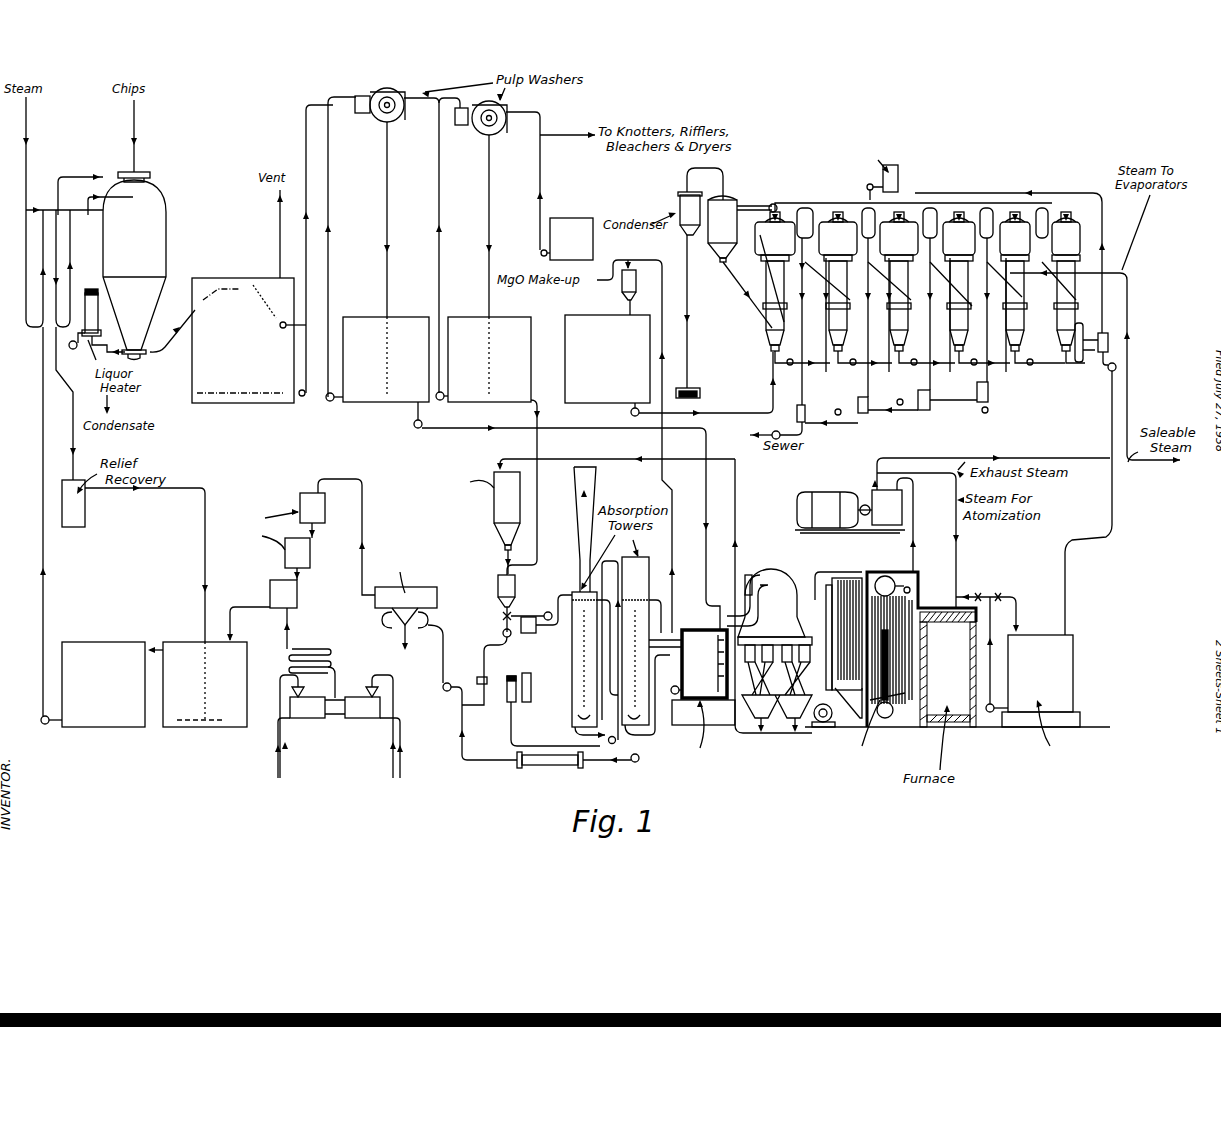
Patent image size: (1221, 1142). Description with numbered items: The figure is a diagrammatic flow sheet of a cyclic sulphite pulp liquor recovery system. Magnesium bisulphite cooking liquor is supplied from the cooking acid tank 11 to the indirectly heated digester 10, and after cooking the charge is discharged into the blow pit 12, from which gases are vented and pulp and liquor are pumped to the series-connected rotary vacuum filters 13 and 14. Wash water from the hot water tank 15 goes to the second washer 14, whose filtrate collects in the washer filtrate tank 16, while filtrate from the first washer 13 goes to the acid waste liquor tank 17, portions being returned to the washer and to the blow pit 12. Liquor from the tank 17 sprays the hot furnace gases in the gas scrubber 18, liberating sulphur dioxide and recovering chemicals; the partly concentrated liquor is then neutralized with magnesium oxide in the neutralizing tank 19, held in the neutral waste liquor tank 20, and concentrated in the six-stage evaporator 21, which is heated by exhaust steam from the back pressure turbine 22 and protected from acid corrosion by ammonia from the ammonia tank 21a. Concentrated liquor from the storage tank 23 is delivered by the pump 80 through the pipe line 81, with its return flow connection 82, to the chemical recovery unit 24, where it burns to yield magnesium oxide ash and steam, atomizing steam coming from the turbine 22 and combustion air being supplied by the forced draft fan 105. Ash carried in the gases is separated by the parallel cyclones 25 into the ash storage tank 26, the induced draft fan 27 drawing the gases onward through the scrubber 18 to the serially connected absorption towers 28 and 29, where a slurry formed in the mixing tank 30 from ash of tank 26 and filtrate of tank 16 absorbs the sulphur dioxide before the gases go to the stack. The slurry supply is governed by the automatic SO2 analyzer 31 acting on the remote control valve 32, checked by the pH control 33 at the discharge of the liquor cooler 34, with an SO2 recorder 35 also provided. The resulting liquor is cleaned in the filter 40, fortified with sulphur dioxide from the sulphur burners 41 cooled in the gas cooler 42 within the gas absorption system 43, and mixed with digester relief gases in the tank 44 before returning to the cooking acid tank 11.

The digester 10 is at (168, 252).
The cooking acid tank 11 is at (100, 728).
The blow pit 12 is at (222, 283).
The rotary vacuum filter 13 is at (375, 95).
The rotary vacuum filter 14 is at (480, 133).
The hot water tank 15 is at (573, 212).
The washer filtrate tank 16 is at (516, 317).
The acid waste liquor tank 17 is at (401, 317).
The gas scrubber 18 is at (740, 612).
The neutralizing tank 19 is at (640, 270).
The neutral waste liquor tank 20 is at (565, 351).
The six-stage evaporator 21 is at (890, 232).
The ammonia tank 21a is at (940, 158).
The back pressure turbine 22 is at (866, 492).
The storage tank 23 is at (1055, 704).
The chemical recovery unit 24 is at (920, 607).
The cyclones 25 is at (752, 680).
The ash storage tank 26 is at (469, 518).
The induced draft fan 27 is at (773, 578).
The absorption tower 28 is at (642, 650).
The absorption tower 29 is at (595, 602).
The mixing tank 30 is at (516, 585).
The automatic SO2 analyzer 31 is at (531, 688).
The remote control valve 32 is at (501, 616).
The pH control 33 is at (477, 678).
The liquor cooler 34 is at (517, 770).
The SO2 recorder 35 is at (548, 612).
The filter 40 is at (422, 590).
The sulphur burners 41 is at (370, 706).
The gas cooler 42 is at (333, 663).
The gas absorption system 43 is at (318, 568).
The tank 44 is at (197, 684).
The pump 80 is at (990, 720).
The pipe line 81 is at (992, 630).
The return flow connection 82 is at (1018, 608).
The forced draft fan 105 is at (818, 723).